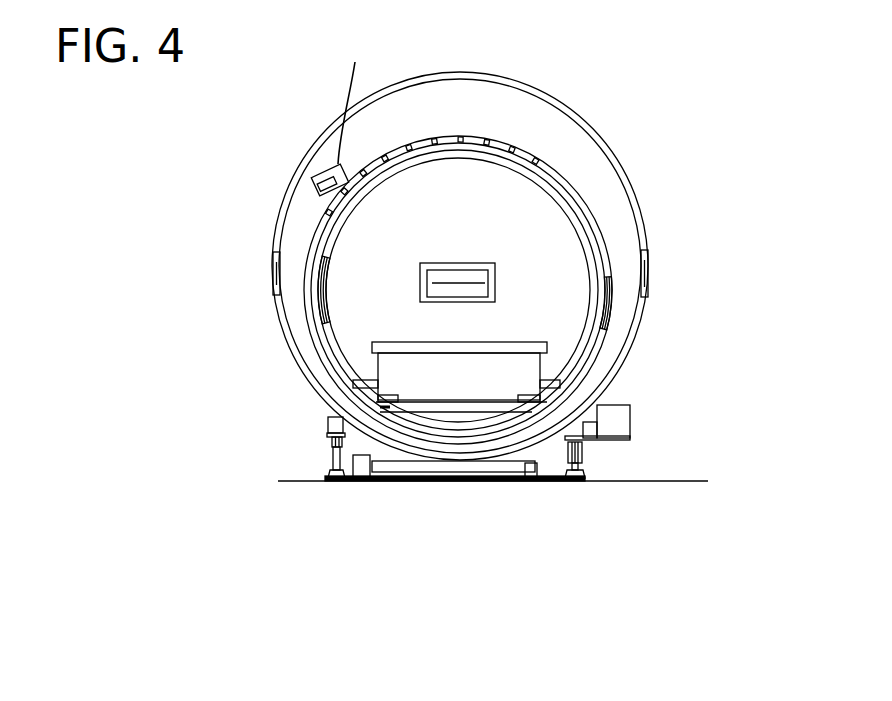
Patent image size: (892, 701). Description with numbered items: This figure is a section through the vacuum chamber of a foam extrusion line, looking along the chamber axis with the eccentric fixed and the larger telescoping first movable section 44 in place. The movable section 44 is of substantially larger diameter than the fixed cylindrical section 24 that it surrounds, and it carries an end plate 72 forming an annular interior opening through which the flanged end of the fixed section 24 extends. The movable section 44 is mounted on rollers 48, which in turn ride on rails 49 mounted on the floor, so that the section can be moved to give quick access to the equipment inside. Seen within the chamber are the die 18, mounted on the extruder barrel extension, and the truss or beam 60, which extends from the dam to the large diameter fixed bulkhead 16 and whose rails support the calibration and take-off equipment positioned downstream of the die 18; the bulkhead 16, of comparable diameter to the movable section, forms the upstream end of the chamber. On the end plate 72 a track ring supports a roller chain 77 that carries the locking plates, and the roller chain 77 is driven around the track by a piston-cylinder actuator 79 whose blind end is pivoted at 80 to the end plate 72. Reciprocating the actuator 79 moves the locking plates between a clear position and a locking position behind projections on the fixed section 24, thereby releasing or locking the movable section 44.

The fixed bulkhead plate 16 is at (568, 263).
The die 18 is at (453, 262).
The fixed cylindrical section 24 is at (577, 213).
The movable section 44 is at (598, 102).
The rollers 48 is at (328, 425).
The foot / base 49 is at (327, 472).
The truss or beam 60 is at (413, 363).
The end plate 72 is at (546, 128).
The roller chain 77 is at (482, 128).
The piston-cylinder actuator 79 is at (355, 97).
The pivot 80 is at (316, 162).